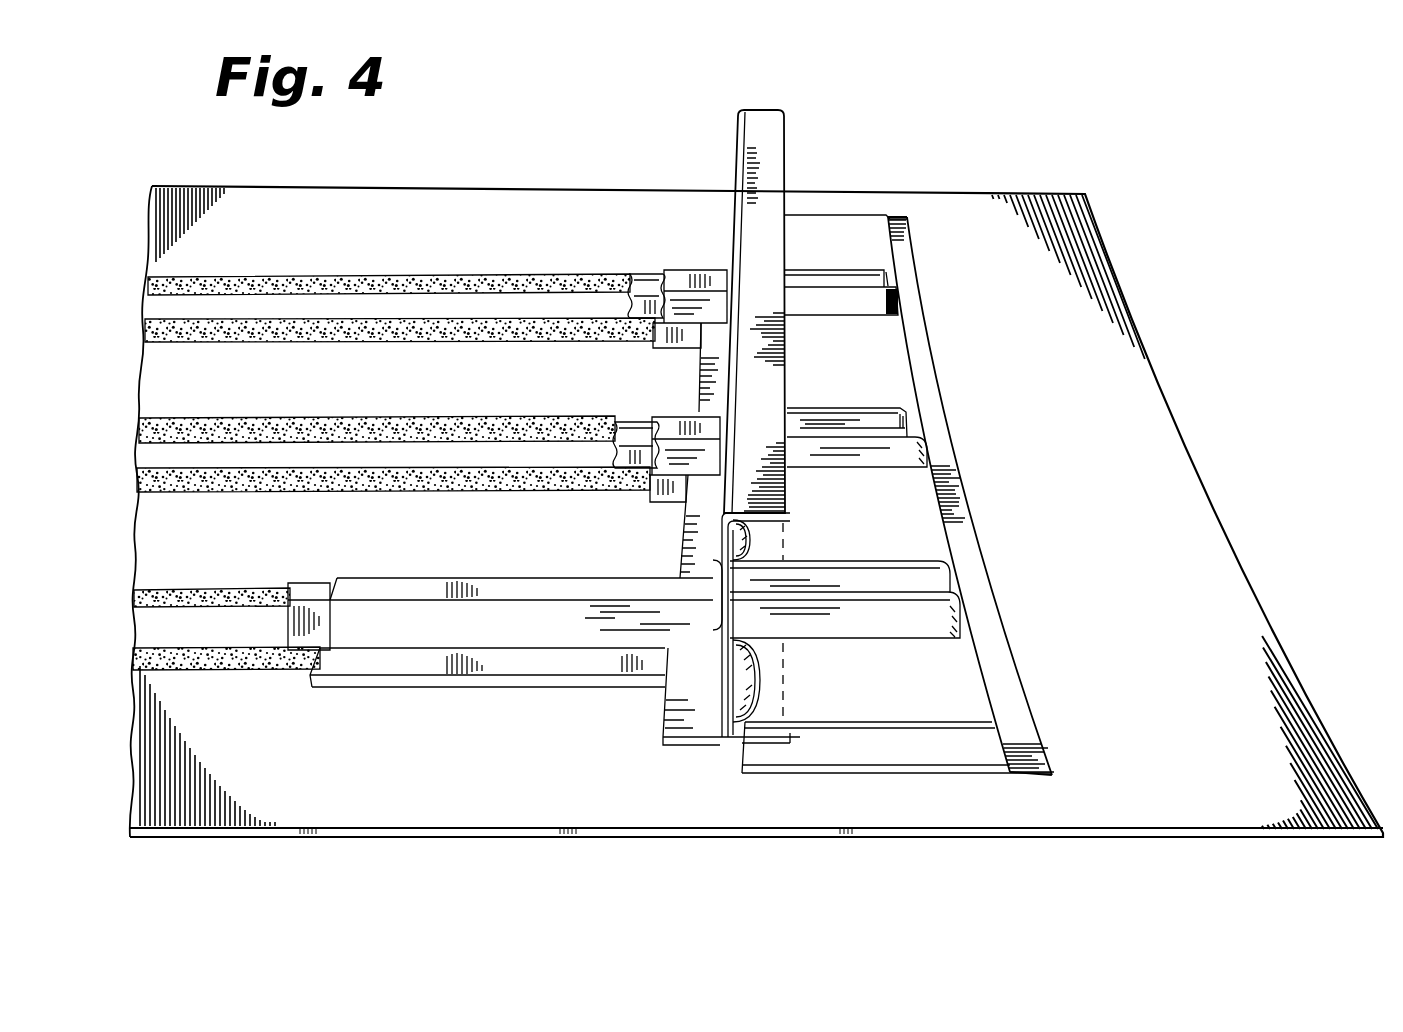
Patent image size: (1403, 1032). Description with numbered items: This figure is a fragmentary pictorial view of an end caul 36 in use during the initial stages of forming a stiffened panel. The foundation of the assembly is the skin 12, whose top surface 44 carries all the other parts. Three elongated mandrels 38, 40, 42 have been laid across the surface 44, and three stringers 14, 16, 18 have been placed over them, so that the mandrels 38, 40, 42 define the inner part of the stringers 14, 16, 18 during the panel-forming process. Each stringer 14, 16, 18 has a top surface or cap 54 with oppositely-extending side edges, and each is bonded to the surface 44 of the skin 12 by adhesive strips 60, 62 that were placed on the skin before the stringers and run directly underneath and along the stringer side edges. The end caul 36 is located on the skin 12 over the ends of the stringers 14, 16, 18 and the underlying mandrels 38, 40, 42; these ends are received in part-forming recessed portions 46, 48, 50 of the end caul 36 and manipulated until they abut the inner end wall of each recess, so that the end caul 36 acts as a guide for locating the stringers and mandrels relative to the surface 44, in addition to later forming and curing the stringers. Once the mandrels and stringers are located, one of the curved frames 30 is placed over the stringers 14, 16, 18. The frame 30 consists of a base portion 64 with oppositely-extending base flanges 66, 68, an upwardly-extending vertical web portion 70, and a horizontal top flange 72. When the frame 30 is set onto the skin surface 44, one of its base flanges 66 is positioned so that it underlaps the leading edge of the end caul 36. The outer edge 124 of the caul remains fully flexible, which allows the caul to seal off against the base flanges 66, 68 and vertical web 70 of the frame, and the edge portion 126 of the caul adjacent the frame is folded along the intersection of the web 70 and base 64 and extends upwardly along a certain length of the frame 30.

The skin 12 is at (1085, 405).
The stringer 14 is at (690, 266).
The stringer 16 is at (670, 418).
The stringer 18 is at (598, 686).
The curved frame 30 is at (796, 283).
The end caul 36 is at (862, 204).
The mandrel 38 is at (650, 272).
The mandrel 40 is at (627, 423).
The mandrel 42 is at (312, 583).
The top surface of the skin 44 is at (1035, 283).
The part-forming recessed portion 46 is at (930, 220).
The part-forming recessed portion 48 is at (898, 415).
The part-forming recessed portion 50 is at (917, 573).
The top surface or cap 54 is at (424, 588).
The adhesive strip 60 is at (230, 277).
The adhesive strip 62 is at (150, 325).
The base portion 64 is at (722, 738).
The base flange 66 is at (775, 740).
The base flange 68 is at (665, 740).
The vertical web portion 70 is at (750, 545).
The horizontal top flange 72 is at (756, 172).
The outer edge of the caul 124 is at (915, 753).
The edge portion of the caul 126 is at (760, 723).